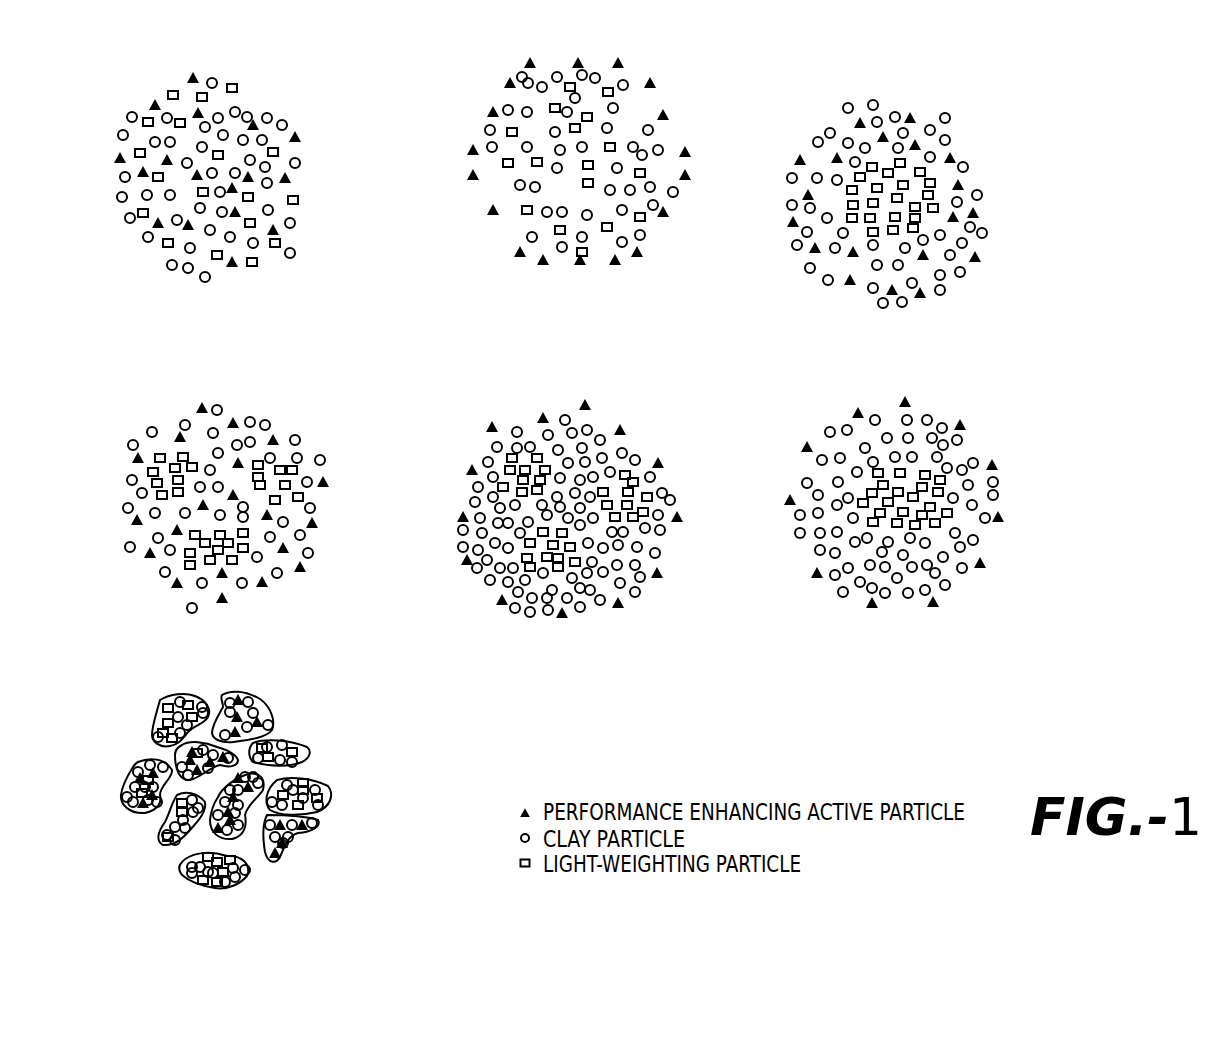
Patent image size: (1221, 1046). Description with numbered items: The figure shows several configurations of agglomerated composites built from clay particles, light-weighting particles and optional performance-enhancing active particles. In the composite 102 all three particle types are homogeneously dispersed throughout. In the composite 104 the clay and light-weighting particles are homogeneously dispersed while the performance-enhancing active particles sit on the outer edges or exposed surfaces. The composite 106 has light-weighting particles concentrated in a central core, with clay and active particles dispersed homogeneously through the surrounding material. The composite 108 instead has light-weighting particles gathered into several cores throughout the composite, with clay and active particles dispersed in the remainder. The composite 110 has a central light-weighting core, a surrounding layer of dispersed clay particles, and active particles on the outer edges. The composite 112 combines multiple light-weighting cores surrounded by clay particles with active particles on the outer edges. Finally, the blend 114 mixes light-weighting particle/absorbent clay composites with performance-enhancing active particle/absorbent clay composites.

The composite with homogeneously dispersed particles 102 is at (144, 106).
The composite with surface-located active particles 104 is at (630, 72).
The composite with central light-weighting core 106 is at (896, 106).
The composite with multiple light-weighting cores 108 is at (248, 411).
The composite with multiple light-weighting cores and surface actives 112 is at (566, 412).
The composite with central core, clay layer and surface actives 110 is at (938, 410).
The blend of composites 114 is at (317, 770).